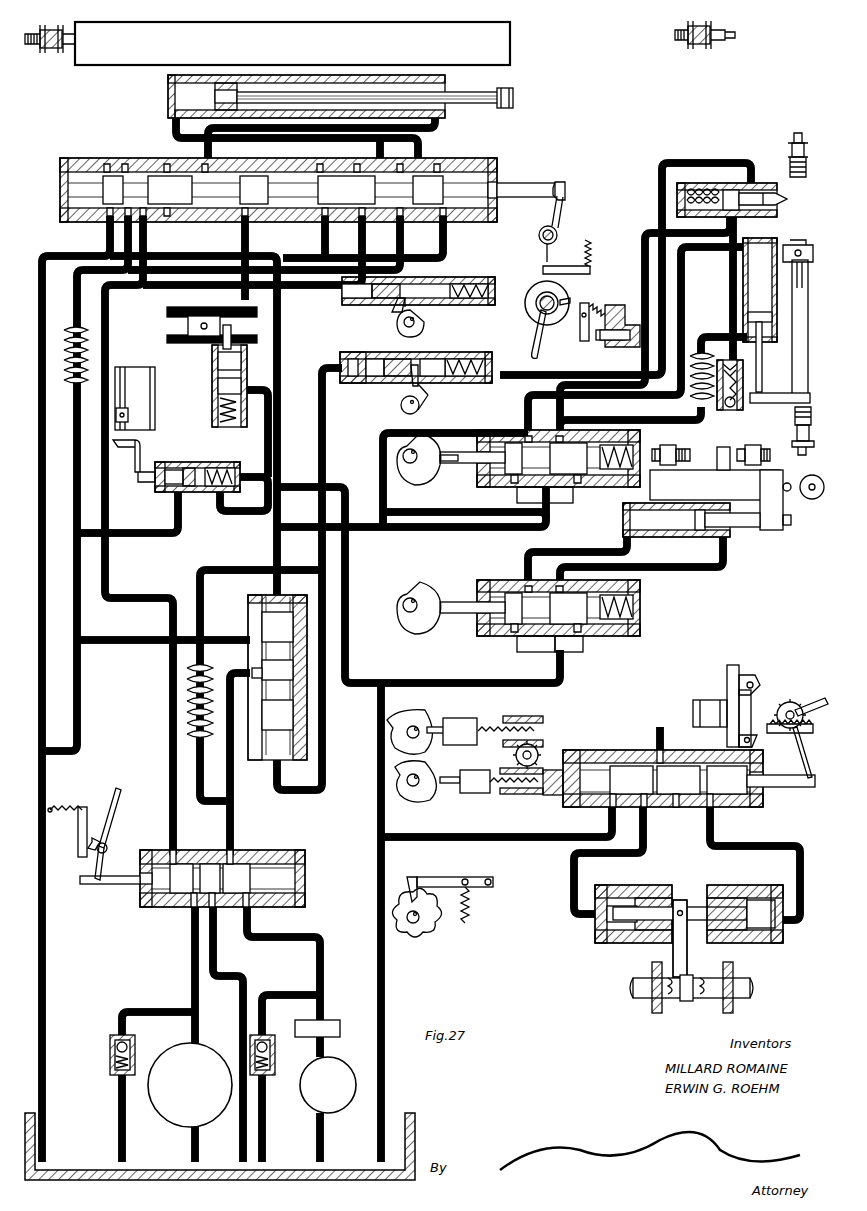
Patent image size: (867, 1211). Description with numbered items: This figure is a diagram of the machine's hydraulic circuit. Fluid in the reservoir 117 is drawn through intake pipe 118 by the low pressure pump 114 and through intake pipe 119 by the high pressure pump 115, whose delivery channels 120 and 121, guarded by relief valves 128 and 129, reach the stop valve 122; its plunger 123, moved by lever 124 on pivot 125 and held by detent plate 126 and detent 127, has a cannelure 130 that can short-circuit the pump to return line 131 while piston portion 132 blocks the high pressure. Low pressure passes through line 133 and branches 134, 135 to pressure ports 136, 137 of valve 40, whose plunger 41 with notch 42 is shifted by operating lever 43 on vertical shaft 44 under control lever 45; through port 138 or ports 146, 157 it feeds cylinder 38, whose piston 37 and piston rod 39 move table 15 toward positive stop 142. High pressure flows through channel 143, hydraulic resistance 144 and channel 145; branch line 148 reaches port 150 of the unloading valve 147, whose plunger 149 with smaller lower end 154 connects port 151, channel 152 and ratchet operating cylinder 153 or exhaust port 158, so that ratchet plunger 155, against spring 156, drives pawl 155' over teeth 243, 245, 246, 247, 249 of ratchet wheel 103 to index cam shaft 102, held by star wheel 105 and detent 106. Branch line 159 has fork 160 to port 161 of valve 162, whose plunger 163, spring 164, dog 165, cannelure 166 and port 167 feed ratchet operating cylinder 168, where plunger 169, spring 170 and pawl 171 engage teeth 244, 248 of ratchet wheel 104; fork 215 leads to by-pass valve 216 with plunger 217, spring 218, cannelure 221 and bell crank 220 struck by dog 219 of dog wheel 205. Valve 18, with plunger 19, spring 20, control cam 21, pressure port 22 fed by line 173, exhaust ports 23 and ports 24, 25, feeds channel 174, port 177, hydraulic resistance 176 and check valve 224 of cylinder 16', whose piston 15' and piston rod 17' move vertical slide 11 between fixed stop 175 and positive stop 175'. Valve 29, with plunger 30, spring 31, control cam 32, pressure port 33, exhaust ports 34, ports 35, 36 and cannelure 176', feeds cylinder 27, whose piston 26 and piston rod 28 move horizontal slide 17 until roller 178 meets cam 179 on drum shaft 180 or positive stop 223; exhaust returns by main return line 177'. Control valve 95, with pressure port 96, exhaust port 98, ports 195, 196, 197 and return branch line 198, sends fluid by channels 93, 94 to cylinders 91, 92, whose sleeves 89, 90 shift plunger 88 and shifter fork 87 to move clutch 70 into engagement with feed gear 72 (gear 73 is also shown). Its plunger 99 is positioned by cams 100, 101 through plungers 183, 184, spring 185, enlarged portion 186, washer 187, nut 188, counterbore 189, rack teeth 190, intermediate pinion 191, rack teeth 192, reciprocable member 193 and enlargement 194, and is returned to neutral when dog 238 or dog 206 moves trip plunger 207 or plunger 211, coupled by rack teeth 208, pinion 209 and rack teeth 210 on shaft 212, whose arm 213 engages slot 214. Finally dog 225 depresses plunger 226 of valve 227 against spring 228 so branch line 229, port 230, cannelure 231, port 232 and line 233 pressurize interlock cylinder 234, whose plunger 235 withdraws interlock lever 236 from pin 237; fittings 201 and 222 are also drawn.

The vertical slide 11 is at (793, 355).
The table 15 is at (309, 43).
The piston 15' is at (760, 301).
The cylinder 16' is at (780, 271).
The horizontal slide 17 is at (725, 491).
The piston rod 17' is at (769, 357).
The valve 18 is at (478, 480).
The valve plunger 19 is at (463, 452).
The spring 20 is at (645, 452).
The control cam 21 is at (412, 486).
The pressure port 22 is at (545, 496).
The exhaust ports 23 is at (512, 483).
The port 24 is at (530, 430).
The port 25 is at (560, 430).
The piston 26 is at (698, 530).
The cylinder 27 is at (656, 537).
The piston rod 28 is at (745, 527).
The valve 29 is at (478, 628).
The valve plunger 30 is at (463, 600).
The spring 31 is at (640, 596).
The control cam 32 is at (410, 620).
The pressure port 33 is at (536, 646).
The exhaust ports 34 is at (512, 634).
The port 35 is at (526, 578).
The port 36 is at (560, 578).
The piston 37 is at (224, 82).
The cylinder 38 is at (168, 86).
The piston rod 39 is at (458, 100).
The valve 40 is at (485, 160).
The valve plunger 41 is at (508, 190).
The notch 42 is at (563, 182).
The operating lever 43 is at (562, 212).
The vertical shaft 44 is at (558, 232).
The control lever 45 is at (537, 352).
The clutch 70 is at (686, 1004).
The feed gear 72 is at (650, 1012).
The gear 73 is at (738, 1010).
The shifter fork 87 is at (688, 970).
The reciprocable plunger 88 is at (682, 898).
The shiftable sleeve 89 is at (660, 883).
The shiftable sleeve 90 is at (722, 892).
The cylinder 91 is at (613, 890).
The cylinder 92 is at (760, 892).
The channel 93 is at (574, 886).
The channel 94 is at (800, 852).
The control valve 95 is at (625, 752).
The pressure port 96 is at (662, 748).
The exhaust port 98 is at (714, 820).
The valve plunger 99 is at (590, 770).
The cam 100 is at (418, 798).
The cam 101 is at (414, 712).
The vertical cam shaft 102 is at (420, 772).
The ratchet wheel 103 is at (398, 408).
The ratchet wheel 104 is at (404, 327).
The star wheel 105 is at (410, 942).
The spring pressed detent 106 is at (425, 878).
The low pressure pump 114 is at (172, 1110).
The high pressure pump 115 is at (330, 1110).
The fluid reservoir 117 is at (414, 1120).
The intake pipe 118 is at (198, 1146).
The intake pipe 119 is at (324, 1146).
The delivery channel 120 is at (194, 996).
The delivery channel 121 is at (322, 963).
The stop valve 122 is at (286, 855).
The valve plunger 123 is at (255, 855).
The lever 124 is at (110, 822).
The pivot 125 is at (108, 846).
The detent plate 126 is at (96, 830).
The spring pressed detent 127 is at (78, 848).
The emergency relief valve 128 is at (112, 1037).
The relief valve 129 is at (270, 1037).
The cannelure 130 is at (176, 857).
The return line 131 is at (220, 963).
The piston portion 132 is at (207, 864).
The line 133 is at (104, 334).
The branch 134 is at (132, 268).
The branch 135 is at (246, 266).
The pressure port 136 is at (108, 232).
The pressure port 137 is at (243, 230).
The port 138 is at (205, 158).
The positive stop 142 is at (68, 48).
The channel 143 is at (202, 790).
The hydraulic resistance 144 is at (187, 693).
The channel 145 is at (277, 548).
The port 146 is at (402, 228).
The unloading valve 147 is at (296, 700).
The branch line 148 is at (232, 765).
The plunger 149 is at (248, 610).
The port 150 is at (250, 664).
The port 151 is at (306, 660).
The channel 152 is at (324, 450).
The ratchet operating cylinder 153 is at (350, 350).
The lower end 154 is at (298, 745).
The ratchet plunger 155 is at (394, 381).
The pawl 155' is at (400, 379).
The spring 156 is at (490, 355).
The port 157 is at (378, 158).
The exhaust port 158 is at (262, 625).
The branch line 159 is at (308, 792).
The fork 160 is at (258, 452).
The port 161 is at (236, 424).
The valve 162 is at (213, 356).
The plunger 163 is at (238, 344).
The spring 164 is at (214, 436).
The dog 165 is at (182, 314).
The cannelure 166 is at (216, 384).
The port 167 is at (240, 372).
The ratchet operating cylinder 168 is at (348, 305).
The plunger 169 is at (438, 278).
The spring 170 is at (470, 278).
The pawl 171 is at (395, 312).
The line 173 is at (395, 530).
The channel 174 is at (680, 328).
The fixed stop 175 is at (790, 428).
The positive stop 175' is at (770, 155).
The hydraulic resistance 176 is at (637, 389).
The cannelure 176' is at (570, 646).
The port 177 is at (731, 345).
The main return line 177' is at (418, 585).
The roller 178 is at (790, 492).
The cam 179 is at (804, 524).
The drum shaft 180 is at (812, 474).
The plunger 183 is at (437, 722).
The plunger 184 is at (450, 790).
The spring 185 is at (504, 800).
The enlarged portion 186 is at (475, 795).
The washer 187 is at (540, 800).
The nut 188 is at (552, 798).
The counterbore 189 is at (520, 795).
The rack teeth 190 is at (552, 760).
The intermediate pinion 191 is at (516, 756).
The rack teeth 192 is at (550, 745).
The reciprocable member 193 is at (486, 720).
The enlargement 194 is at (460, 720).
The port 195 is at (677, 815).
The port 196 is at (643, 815).
The port 197 is at (612, 816).
The return branch line 198 is at (504, 838).
The fitting 201 is at (752, 445).
The dog wheel 205 is at (152, 370).
The dog 206 is at (760, 742).
The trip plunger 207 is at (790, 690).
The rack teeth 208 is at (790, 700).
The pinion 209 is at (808, 708).
The rack teeth 210 is at (810, 752).
The plunger 211 is at (810, 765).
The shaft 212 is at (752, 686).
The arm 213 is at (805, 772).
The slot 214 is at (808, 790).
The fork 215 is at (232, 522).
The by-pass valve 216 is at (180, 460).
The plunger 217 is at (170, 462).
The spring 218 is at (214, 492).
The dog 219 is at (130, 414).
The bell crank 220 is at (130, 450).
The cannelure 221 is at (186, 496).
The pipe 222 is at (124, 540).
The positive stop 223 is at (670, 448).
The check valve 224 is at (742, 412).
The dog 225 is at (820, 252).
The plunger 226 is at (773, 196).
The valve 227 is at (693, 183).
The spring 228 is at (686, 185).
The branch line 229 is at (730, 288).
The port 230 is at (663, 216).
The cannelure 231 is at (742, 185).
The port 232 is at (740, 222).
The line 233 is at (648, 248).
The interlock cylinder 234 is at (622, 350).
The plunger 235 is at (600, 345).
The interlock lever 236 is at (588, 300).
The pin 237 is at (553, 320).
The dog 238 is at (748, 668).
The tooth 243 is at (390, 410).
The ratchet tooth 244 is at (398, 336).
The tooth 245 is at (398, 414).
The tooth 246 is at (423, 408).
The tooth 247 is at (430, 388).
The tooth 248 is at (412, 310).
The tooth 249 is at (405, 398).